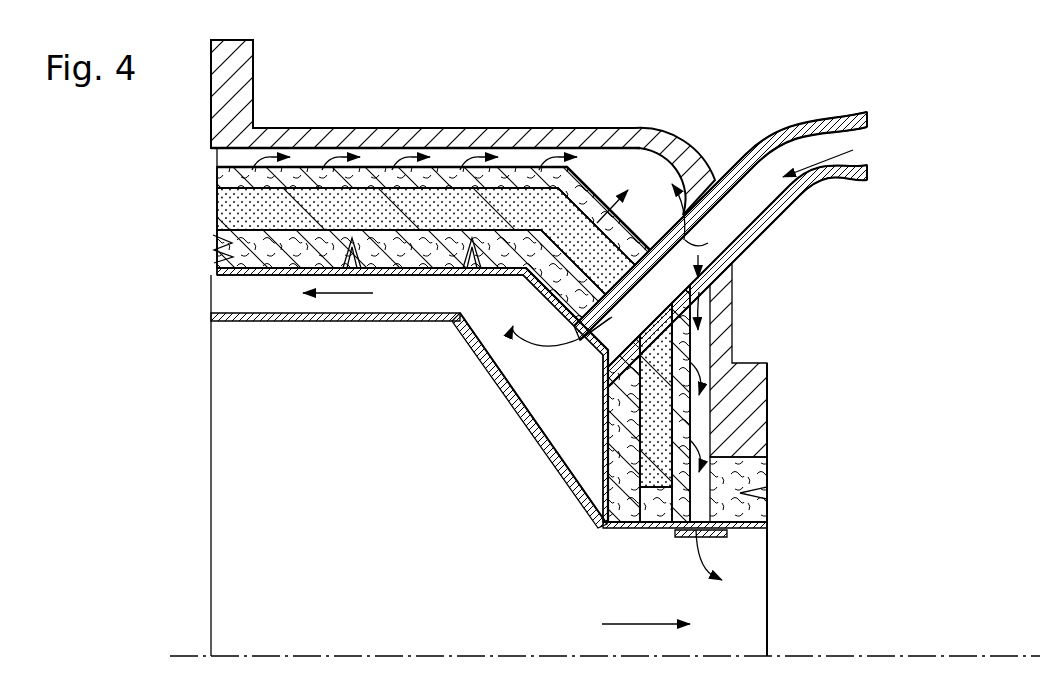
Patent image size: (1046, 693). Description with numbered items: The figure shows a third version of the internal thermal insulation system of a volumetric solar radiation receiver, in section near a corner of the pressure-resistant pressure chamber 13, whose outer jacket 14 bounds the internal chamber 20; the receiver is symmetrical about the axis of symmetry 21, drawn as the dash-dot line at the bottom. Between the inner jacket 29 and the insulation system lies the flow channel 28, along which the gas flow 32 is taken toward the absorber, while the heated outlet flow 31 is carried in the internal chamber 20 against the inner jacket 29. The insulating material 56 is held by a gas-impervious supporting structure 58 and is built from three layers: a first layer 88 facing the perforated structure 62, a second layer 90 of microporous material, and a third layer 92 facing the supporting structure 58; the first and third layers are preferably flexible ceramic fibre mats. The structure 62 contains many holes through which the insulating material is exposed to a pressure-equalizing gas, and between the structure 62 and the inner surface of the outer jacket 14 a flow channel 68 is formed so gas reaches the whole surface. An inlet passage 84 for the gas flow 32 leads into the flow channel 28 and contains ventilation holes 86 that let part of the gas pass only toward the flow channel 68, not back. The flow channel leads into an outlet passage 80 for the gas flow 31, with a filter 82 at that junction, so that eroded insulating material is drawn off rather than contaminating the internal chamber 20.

The pressure chamber 13 is at (596, 124).
The outer jacket 14 is at (395, 128).
The internal chamber 20 is at (340, 549).
The axis of symmetry 21 is at (814, 652).
The flow channel 28 is at (403, 300).
The inner jacket 29 is at (537, 437).
The outlet flow 31 is at (620, 622).
The gas flow 32 is at (548, 349).
The insulation material 56 is at (214, 194).
The supporting structure 58 is at (252, 277).
The structure 62 is at (301, 170).
The flow channel 68 is at (522, 166).
The outlet passage 80 is at (738, 598).
The filter 82 is at (703, 542).
The inlet passage 84 is at (858, 145).
The ventilation holes 86 is at (684, 220).
The first layer 88 is at (218, 172).
The second layer 90 is at (237, 212).
The third layer 92 is at (222, 250).